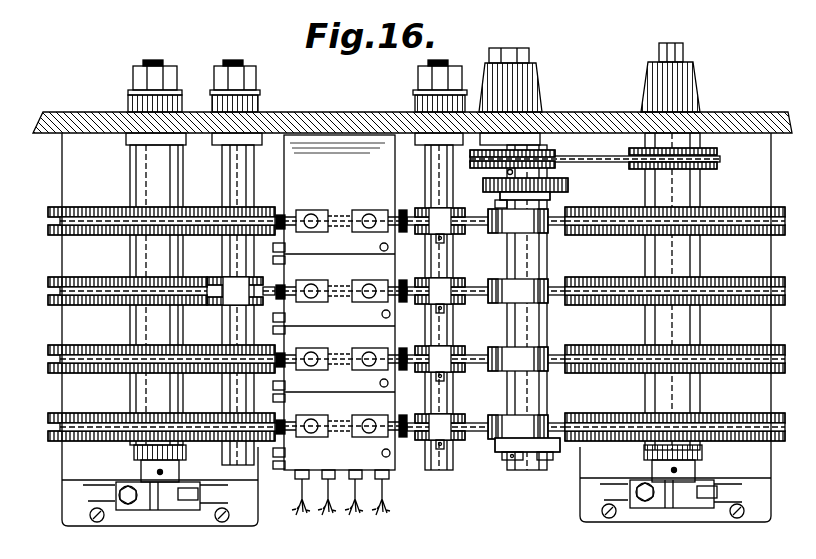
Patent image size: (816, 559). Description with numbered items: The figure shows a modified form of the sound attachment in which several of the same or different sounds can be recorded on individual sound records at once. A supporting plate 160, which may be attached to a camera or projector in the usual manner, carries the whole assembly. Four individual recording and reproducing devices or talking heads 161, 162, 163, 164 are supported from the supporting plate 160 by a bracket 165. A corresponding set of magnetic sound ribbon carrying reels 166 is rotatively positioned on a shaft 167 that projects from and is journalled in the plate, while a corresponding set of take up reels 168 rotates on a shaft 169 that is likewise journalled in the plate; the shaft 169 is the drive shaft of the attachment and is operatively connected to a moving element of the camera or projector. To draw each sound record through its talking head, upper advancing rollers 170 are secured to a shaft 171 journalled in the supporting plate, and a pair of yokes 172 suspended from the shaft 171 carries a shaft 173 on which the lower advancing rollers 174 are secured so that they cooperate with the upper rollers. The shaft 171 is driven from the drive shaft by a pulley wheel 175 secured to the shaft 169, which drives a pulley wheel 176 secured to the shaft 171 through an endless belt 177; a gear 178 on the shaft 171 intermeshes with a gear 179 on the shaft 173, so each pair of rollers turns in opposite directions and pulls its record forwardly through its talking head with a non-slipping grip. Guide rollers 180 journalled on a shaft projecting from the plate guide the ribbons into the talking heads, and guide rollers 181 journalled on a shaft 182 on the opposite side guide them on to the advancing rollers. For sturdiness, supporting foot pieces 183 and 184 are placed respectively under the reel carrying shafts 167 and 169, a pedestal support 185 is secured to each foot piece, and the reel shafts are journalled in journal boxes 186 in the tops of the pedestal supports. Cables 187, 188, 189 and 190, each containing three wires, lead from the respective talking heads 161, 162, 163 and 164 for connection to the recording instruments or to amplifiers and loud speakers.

The supporting plate 160 is at (594, 120).
The talking head 161 is at (341, 216).
The talking head 162 is at (341, 289).
The talking head 163 is at (341, 359).
The talking head 164 is at (341, 426).
The bracket 165 is at (340, 307).
The sound ribbon carrying reels 166 is at (90, 206).
The shaft 167 is at (182, 147).
The take up reels 168 is at (740, 199).
The drive shaft 169 is at (671, 64).
The upper advancing rollers 170 is at (500, 279).
The upper shaft 171 is at (505, 323).
The yokes 172 is at (494, 204).
The shaft 173 is at (550, 324).
The lower advancing rollers 174 is at (556, 276).
The pulley wheel 175 is at (718, 152).
The pulley wheel 176 is at (556, 150).
The endless belt 177 is at (608, 162).
The gear 178 is at (490, 183).
The gear 179 is at (574, 186).
The guide rollers 180 is at (222, 205).
The guide rollers 181 is at (429, 237).
The shaft 182 is at (429, 188).
The supporting foot piece 183 is at (143, 343).
The supporting foot piece 184 is at (657, 344).
The pedestal support 185 is at (212, 492).
The journal box 186 is at (175, 510).
The cable 187 is at (389, 500).
The cable 188 is at (360, 492).
The cable 189 is at (328, 500).
The cable 190 is at (298, 500).